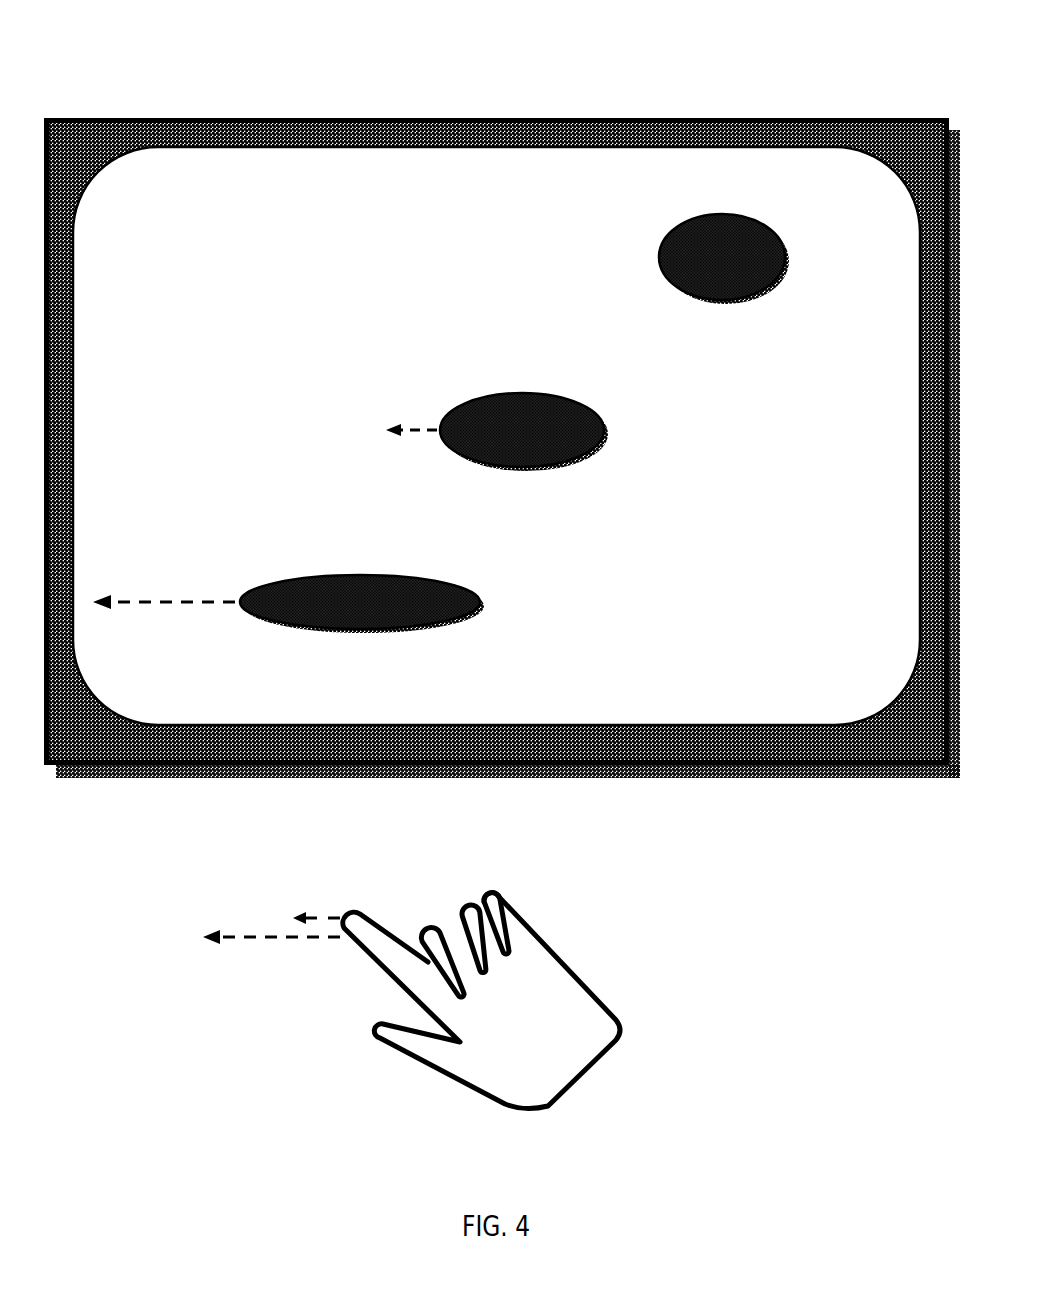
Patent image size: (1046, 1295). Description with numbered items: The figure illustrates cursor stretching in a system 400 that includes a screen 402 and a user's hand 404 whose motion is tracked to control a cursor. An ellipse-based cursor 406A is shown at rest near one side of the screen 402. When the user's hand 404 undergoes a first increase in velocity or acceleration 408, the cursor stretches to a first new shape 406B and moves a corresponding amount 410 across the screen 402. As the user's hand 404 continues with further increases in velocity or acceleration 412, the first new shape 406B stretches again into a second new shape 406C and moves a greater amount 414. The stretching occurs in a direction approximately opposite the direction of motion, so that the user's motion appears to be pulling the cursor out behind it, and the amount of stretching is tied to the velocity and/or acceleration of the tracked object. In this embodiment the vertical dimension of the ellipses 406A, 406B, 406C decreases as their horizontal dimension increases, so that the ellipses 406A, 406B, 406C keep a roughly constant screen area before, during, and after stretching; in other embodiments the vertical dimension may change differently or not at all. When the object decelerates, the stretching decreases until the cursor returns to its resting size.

The system 400 is at (118, 103).
The screen 402 is at (767, 118).
The user's hand 404 is at (570, 953).
The ellipse-based cursor 406A is at (786, 255).
The first new shape 406B is at (605, 430).
The second new shape 406C is at (480, 606).
The first increase in velocity or acceleration 408 is at (331, 916).
The corresponding amount of movement 410 is at (405, 426).
The further increases in velocity or acceleration 412 is at (290, 937).
The greater amount of movement 414 is at (200, 600).